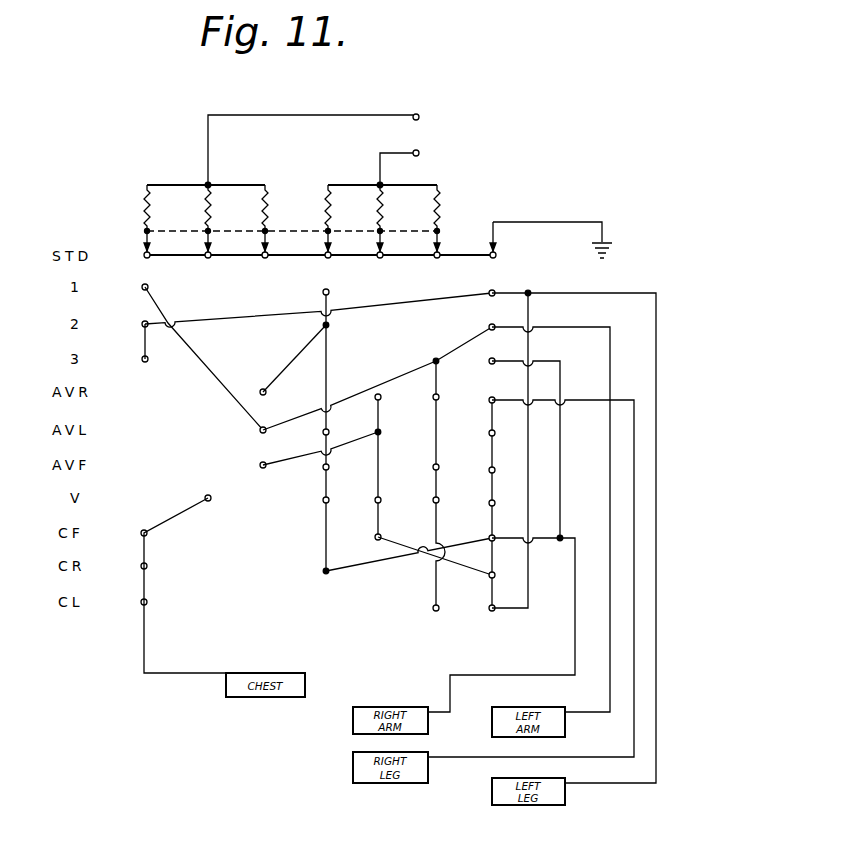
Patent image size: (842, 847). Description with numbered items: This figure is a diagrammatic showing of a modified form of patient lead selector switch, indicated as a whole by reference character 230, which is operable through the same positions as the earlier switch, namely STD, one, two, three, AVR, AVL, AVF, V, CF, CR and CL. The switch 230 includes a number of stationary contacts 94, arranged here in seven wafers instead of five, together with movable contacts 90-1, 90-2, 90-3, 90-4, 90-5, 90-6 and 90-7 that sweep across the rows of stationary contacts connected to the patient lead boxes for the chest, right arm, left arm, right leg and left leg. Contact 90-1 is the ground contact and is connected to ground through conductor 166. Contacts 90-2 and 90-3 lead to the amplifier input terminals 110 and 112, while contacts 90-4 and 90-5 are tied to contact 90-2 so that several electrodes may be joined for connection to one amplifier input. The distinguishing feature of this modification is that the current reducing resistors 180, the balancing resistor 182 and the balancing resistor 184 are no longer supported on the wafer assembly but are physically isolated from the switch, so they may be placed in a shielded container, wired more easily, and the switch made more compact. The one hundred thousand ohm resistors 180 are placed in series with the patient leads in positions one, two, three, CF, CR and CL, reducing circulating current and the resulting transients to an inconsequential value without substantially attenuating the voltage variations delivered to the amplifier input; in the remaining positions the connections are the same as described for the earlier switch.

The modified lead selector switch 230 is at (185, 169).
The resistors 180 is at (145, 208).
The balancing resistor 184 is at (209, 216).
The resistor 182 is at (266, 210).
The movable contact 90-7 is at (145, 231).
The movable contact 90-6 is at (211, 247).
The movable contact 90-5 is at (268, 247).
The movable contact 90-4 is at (331, 247).
The movable contact 90-3 is at (383, 247).
The movable contact 90-2 is at (440, 247).
The ground contact 90-1 is at (496, 243).
The conductor 166 is at (578, 222).
The input terminal 110 is at (420, 115).
The input terminal 112 is at (420, 152).
The stationary contacts 94 is at (142, 359).